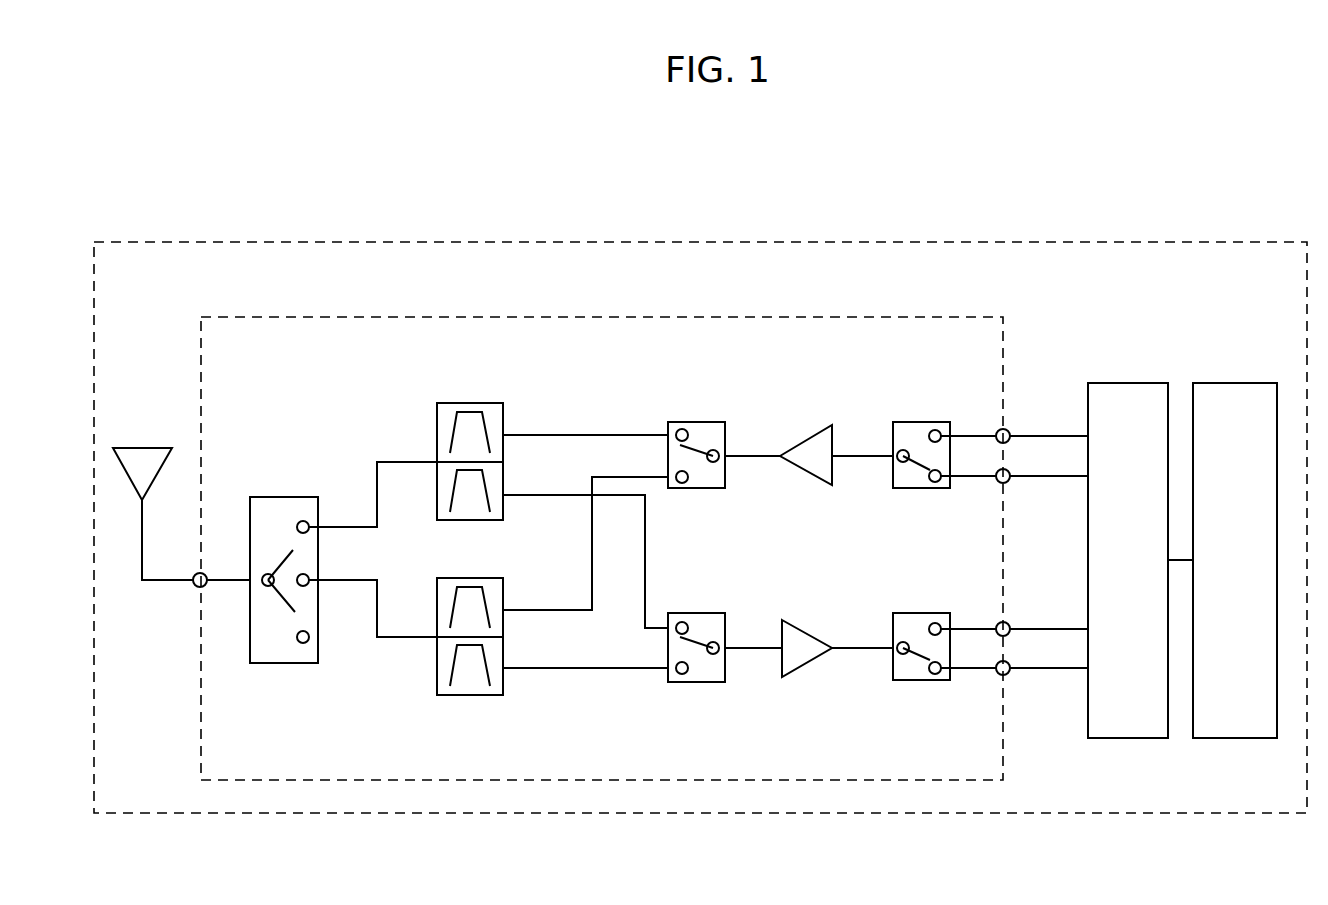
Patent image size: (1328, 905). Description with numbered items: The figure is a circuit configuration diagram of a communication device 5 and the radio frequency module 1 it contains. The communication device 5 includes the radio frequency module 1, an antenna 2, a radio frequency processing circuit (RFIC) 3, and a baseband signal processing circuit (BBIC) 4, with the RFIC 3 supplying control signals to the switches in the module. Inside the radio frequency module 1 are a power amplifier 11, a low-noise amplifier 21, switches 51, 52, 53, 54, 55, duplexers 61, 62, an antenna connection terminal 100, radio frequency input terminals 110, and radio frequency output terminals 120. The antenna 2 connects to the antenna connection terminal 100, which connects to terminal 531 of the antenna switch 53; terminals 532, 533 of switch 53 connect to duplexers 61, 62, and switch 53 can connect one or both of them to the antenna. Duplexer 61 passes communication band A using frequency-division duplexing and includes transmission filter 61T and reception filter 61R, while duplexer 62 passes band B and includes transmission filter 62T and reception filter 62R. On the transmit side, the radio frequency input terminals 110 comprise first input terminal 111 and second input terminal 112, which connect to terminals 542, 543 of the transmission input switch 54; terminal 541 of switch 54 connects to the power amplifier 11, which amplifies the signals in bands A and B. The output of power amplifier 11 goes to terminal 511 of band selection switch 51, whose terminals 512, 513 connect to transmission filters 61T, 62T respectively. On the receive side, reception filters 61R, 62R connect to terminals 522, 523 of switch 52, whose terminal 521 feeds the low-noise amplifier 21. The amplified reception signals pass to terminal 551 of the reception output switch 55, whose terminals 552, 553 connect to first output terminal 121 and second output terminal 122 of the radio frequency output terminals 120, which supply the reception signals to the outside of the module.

The radio frequency module 1 is at (960, 318).
The antenna 2 is at (145, 448).
The radio frequency processing circuit (RFIC) 3 is at (1130, 383).
The baseband signal processing circuit (BBIC) 4 is at (1232, 383).
The communication device 5 is at (1262, 242).
The power amplifier 11 is at (815, 443).
The low-noise amplifier 21 is at (798, 632).
The switch 51 is at (711, 453).
The terminal 511 is at (718, 462).
The terminal 512 is at (681, 428).
The terminal 513 is at (683, 484).
The switch 52 is at (711, 645).
The terminal 521 is at (718, 655).
The terminal 522 is at (681, 621).
The terminal 523 is at (683, 675).
The switch 53 is at (289, 557).
The terminal 531 is at (262, 586).
The terminal 532 is at (303, 521).
The terminal 533 is at (310, 580).
The switch 54 is at (899, 450).
The terminal 541 is at (898, 463).
The terminal 542 is at (934, 430).
The terminal 543 is at (935, 483).
The switch 55 is at (899, 643).
The terminal 551 is at (898, 655).
The terminal 552 is at (934, 623).
The terminal 553 is at (935, 675).
The duplexer 61 is at (527, 459).
The transmission filter 61T is at (504, 415).
The reception filter 61R is at (501, 504).
The duplexer 62 is at (527, 639).
The transmission filter 62T is at (504, 593).
The reception filter 62R is at (501, 682).
The antenna connection terminal 100 is at (196, 587).
The radio frequency input terminals 110 is at (1033, 424).
The first input terminal 111 is at (999, 429).
The second input terminal 112 is at (999, 483).
The radio frequency output terminals 120 is at (1033, 617).
The first output terminal 121 is at (999, 622).
The second output terminal 122 is at (999, 675).